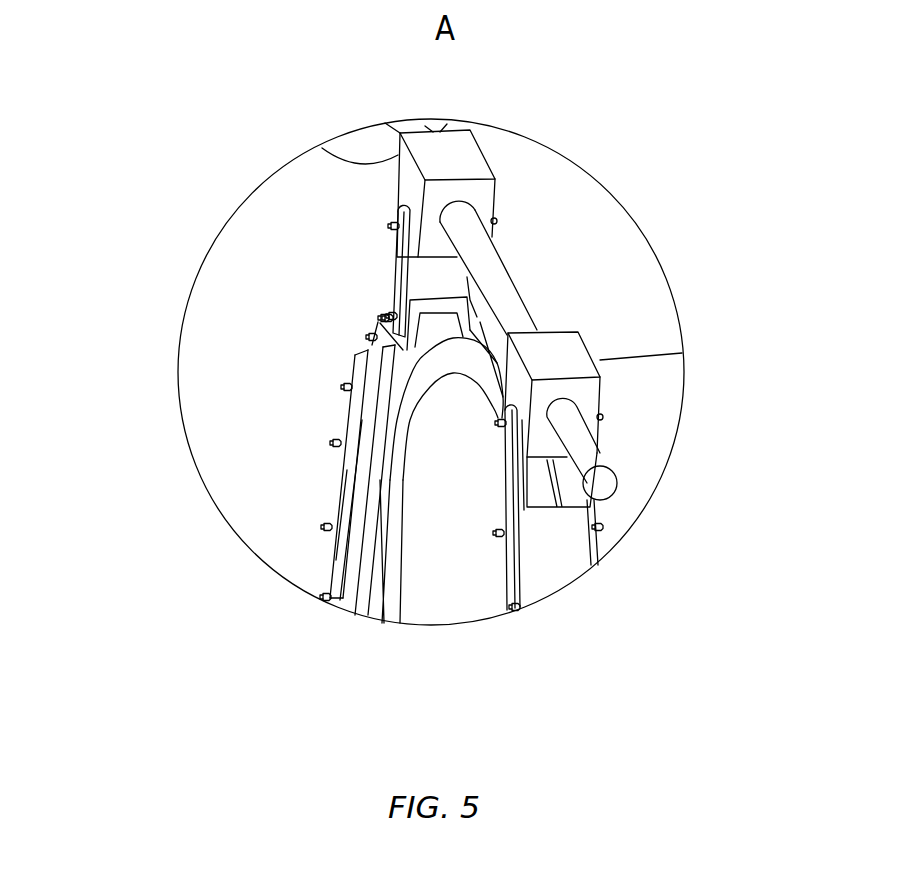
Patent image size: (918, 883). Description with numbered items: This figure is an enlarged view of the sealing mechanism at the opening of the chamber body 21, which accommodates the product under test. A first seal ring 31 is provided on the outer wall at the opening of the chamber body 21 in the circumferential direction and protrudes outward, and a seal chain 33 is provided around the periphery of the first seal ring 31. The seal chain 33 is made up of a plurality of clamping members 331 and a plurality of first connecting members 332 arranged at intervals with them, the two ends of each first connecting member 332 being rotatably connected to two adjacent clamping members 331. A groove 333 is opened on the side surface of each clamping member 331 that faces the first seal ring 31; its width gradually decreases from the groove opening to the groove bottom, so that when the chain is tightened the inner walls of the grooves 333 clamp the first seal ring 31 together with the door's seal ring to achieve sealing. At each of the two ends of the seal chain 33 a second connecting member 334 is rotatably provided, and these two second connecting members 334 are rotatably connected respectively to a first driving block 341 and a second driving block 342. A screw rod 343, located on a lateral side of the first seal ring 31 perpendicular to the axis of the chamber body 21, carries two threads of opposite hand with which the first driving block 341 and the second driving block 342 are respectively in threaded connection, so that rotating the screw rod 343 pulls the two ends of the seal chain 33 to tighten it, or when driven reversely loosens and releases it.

The chamber body 21 is at (663, 377).
The first seal ring 31 is at (467, 366).
The seal chain 33 is at (324, 411).
The clamping member 331 is at (370, 333).
The first connecting member 332 is at (337, 507).
The groove 333 is at (497, 350).
The second connecting member 334 is at (395, 255).
The first driving block 341 is at (462, 150).
The second driving block 342 is at (547, 340).
The screw rod 343 is at (485, 243).